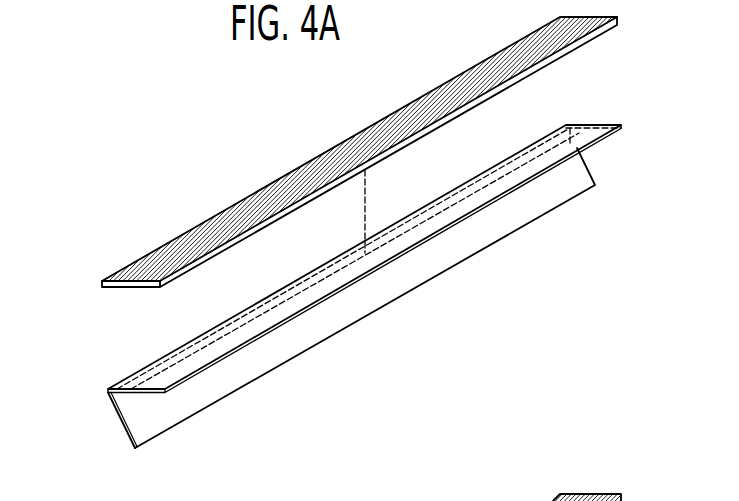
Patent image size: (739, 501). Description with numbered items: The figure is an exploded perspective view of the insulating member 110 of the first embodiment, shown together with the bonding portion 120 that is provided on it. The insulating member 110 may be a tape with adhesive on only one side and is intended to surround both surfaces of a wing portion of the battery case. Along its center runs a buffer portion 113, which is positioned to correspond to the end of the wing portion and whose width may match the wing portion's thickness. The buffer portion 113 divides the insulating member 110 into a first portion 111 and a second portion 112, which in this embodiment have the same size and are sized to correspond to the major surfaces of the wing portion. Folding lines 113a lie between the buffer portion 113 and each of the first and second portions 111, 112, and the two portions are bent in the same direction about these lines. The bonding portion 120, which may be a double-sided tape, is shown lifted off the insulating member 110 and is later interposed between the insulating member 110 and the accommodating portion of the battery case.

The insulating member 110 is at (321, 303).
The first portion 111 is at (136, 389).
The second portion 112 is at (166, 423).
The buffer portion 113 is at (107, 391).
The folding lines 113a is at (198, 348).
The bonding portion 120 is at (297, 178).